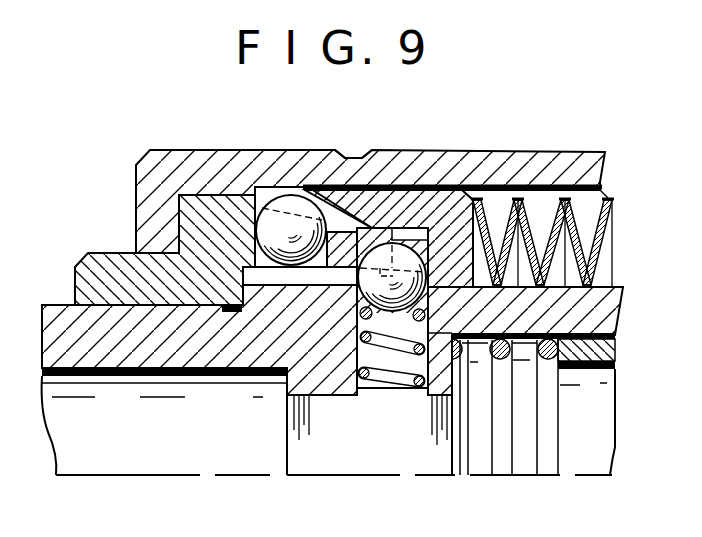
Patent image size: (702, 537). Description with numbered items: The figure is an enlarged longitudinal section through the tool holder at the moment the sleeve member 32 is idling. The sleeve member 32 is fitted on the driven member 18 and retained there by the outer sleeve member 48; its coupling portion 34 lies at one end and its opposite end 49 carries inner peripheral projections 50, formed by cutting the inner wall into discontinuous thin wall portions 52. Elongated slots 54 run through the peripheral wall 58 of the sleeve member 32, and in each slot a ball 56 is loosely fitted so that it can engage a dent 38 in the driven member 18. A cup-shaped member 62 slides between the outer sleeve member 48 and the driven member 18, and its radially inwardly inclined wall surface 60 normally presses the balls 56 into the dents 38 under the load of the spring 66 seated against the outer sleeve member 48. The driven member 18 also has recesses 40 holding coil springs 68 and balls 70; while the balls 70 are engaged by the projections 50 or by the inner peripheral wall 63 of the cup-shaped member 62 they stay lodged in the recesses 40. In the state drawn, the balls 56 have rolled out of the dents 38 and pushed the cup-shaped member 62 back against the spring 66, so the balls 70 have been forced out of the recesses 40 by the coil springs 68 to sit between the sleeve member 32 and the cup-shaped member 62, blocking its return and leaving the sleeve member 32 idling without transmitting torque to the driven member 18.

The driven member 18 is at (228, 357).
The sleeve member 32 is at (205, 208).
The coupling portion 34 is at (112, 268).
The dents 38 is at (281, 281).
The recesses 40 is at (388, 363).
The outer sleeve member 48 is at (577, 163).
The end of the sleeve member 49 is at (429, 236).
The inner peripheral projections 50 is at (427, 268).
The thin wall portions 52 is at (380, 238).
The elongated slots 54 is at (254, 264).
The balls 56 is at (291, 207).
The peripheral wall 58 is at (262, 177).
The radially inwardly inclined wall surface 60 is at (357, 185).
The cup-shaped member 62 is at (447, 189).
The inner peripheral wall 63 is at (452, 308).
The spring 66 is at (583, 232).
The coil springs 68 is at (362, 349).
The balls 70 is at (360, 301).